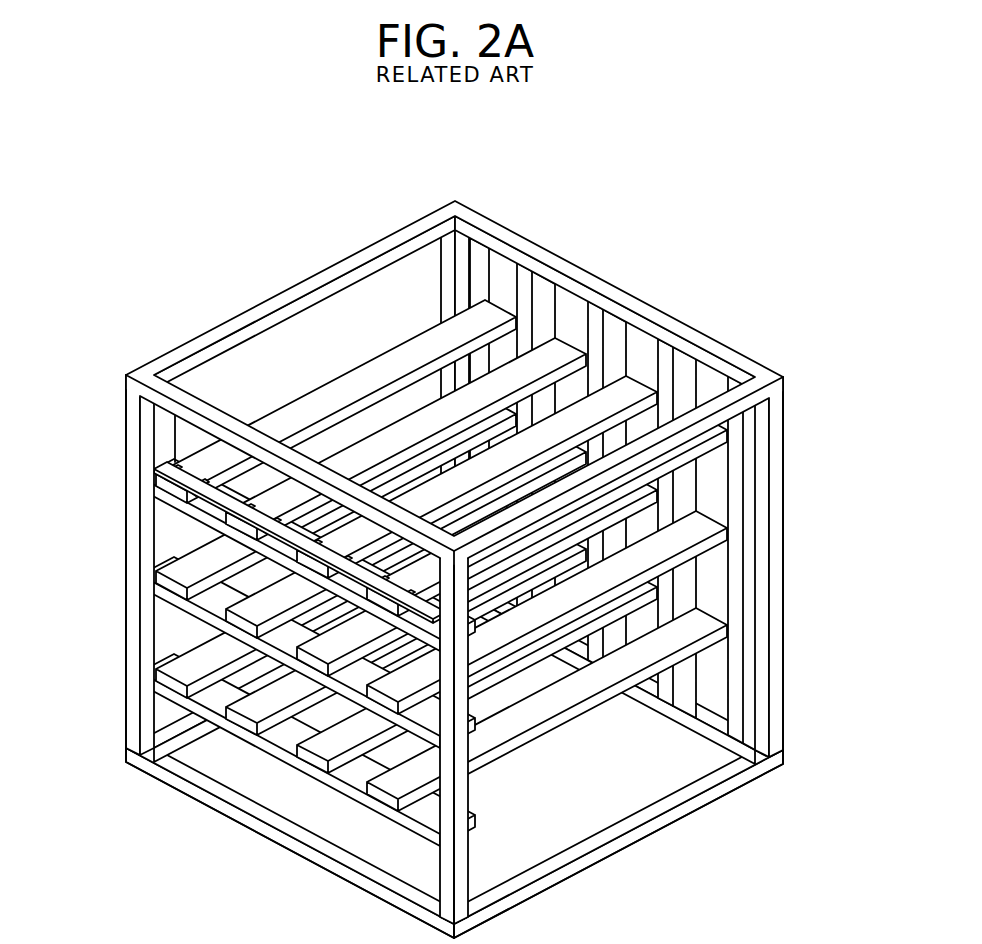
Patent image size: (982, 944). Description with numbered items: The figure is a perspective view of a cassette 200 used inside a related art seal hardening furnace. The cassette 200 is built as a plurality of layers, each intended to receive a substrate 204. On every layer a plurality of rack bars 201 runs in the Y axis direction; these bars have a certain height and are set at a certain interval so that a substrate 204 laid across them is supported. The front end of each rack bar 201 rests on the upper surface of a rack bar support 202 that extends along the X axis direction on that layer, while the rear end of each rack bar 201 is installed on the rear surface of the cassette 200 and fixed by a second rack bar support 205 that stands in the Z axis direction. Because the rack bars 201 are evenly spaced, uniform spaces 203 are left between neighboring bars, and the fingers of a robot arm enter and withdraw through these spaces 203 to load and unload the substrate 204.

The cassette 200 is at (455, 569).
The rack bar 201 is at (248, 528).
The rack bar support 202 is at (155, 493).
The space 203 is at (208, 507).
The substrate 204 is at (177, 460).
The second rack bar support 205 is at (640, 340).